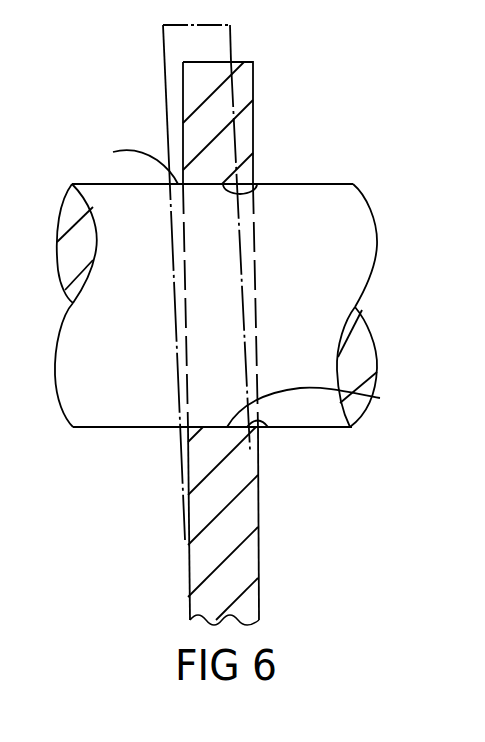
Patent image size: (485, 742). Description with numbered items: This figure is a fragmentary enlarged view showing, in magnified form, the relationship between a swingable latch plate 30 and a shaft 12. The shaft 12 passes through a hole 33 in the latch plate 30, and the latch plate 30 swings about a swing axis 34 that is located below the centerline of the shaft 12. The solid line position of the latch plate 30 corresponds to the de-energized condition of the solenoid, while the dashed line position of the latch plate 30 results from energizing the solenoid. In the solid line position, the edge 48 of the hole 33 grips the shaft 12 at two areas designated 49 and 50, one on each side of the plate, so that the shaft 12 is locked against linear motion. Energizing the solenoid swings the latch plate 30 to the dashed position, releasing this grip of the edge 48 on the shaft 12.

The shaft 12 is at (352, 184).
The latch plate 30 is at (163, 63).
The hole 33 is at (380, 398).
The swing axis 34 is at (220, 607).
The edge 48 is at (267, 184).
The gripping area 49 is at (128, 162).
The gripping area 50 is at (268, 427).